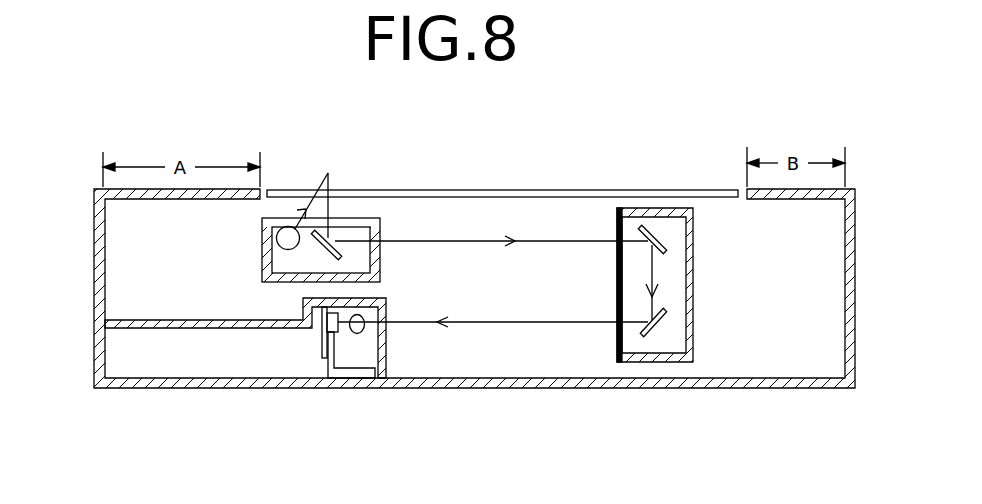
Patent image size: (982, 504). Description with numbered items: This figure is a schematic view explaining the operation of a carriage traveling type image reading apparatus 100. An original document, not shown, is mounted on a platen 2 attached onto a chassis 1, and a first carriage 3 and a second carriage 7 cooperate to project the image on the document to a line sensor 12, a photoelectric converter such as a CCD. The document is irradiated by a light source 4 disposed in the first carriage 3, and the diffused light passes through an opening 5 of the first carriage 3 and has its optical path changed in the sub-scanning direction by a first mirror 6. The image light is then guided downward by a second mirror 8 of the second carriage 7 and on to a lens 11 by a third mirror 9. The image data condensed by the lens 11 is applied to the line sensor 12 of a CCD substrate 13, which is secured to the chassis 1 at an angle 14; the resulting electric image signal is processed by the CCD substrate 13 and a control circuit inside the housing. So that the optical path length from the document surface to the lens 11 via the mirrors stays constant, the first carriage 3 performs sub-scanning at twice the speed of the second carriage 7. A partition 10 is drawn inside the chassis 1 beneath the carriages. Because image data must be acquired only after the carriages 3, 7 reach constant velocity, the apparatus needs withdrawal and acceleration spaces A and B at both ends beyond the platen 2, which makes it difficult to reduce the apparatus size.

The image reading apparatus 100 is at (748, 115).
The chassis 1 is at (94, 232).
The platen 2 is at (508, 188).
The first carriage 3 is at (262, 227).
The light source 4 is at (262, 260).
The opening 5 is at (337, 218).
The first mirror 6 is at (340, 258).
The second carriage 7 is at (665, 240).
The second mirror 8 is at (659, 208).
The third mirror 9 is at (667, 312).
The partition shelf 10 is at (132, 320).
The lens 11 is at (362, 336).
The line sensor 12 is at (338, 333).
The CCD substrate 13 is at (321, 338).
The angle 14 is at (332, 366).